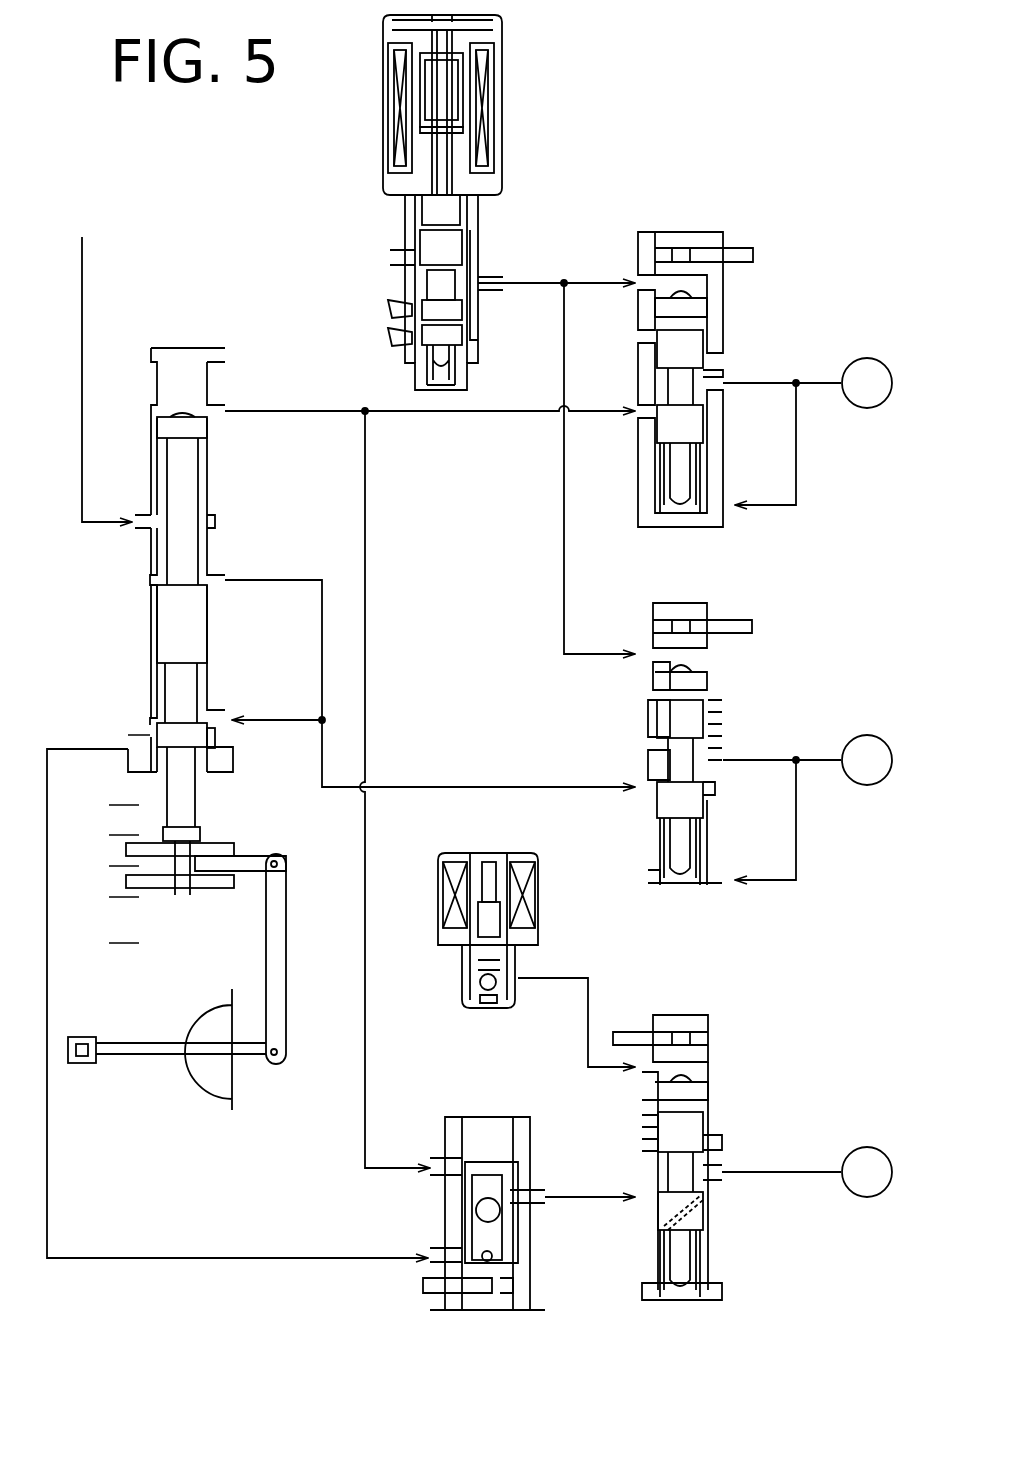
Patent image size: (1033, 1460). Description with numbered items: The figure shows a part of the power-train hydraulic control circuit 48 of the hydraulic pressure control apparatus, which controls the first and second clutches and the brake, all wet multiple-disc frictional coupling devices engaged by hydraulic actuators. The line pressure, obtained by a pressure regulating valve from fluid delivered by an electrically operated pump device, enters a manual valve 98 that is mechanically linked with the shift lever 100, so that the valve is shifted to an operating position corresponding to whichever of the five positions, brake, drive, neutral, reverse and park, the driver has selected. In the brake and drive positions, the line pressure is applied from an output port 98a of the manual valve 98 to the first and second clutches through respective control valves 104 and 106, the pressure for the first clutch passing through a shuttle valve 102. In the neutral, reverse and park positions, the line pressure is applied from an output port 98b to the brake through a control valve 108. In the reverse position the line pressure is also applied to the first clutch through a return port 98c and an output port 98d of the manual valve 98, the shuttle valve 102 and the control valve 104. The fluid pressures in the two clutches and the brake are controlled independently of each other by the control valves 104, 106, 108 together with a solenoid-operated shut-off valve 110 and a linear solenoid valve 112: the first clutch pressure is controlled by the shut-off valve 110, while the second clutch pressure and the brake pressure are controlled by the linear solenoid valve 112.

The power-train hydraulic control circuit 48 is at (740, 62).
The manual valve 98 is at (228, 335).
The output port 98a is at (218, 428).
The output port 98b is at (220, 592).
The return port 98c is at (218, 710).
The output port 98d is at (152, 722).
The shift lever 100 is at (127, 1056).
The shuttle valve 102 is at (465, 1110).
The control valve 104 is at (765, 1034).
The control valve 106 is at (765, 215).
The control valve 108 is at (765, 583).
The solenoid-operated shut-off valve 110 is at (462, 836).
The linear solenoid valve 112 is at (548, 70).